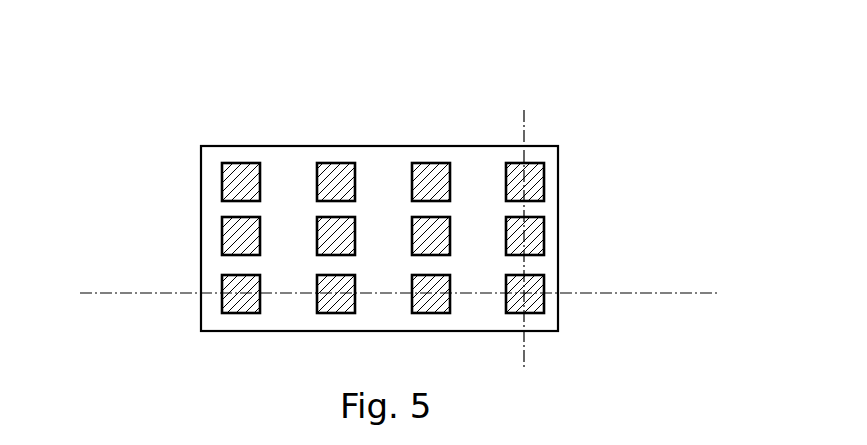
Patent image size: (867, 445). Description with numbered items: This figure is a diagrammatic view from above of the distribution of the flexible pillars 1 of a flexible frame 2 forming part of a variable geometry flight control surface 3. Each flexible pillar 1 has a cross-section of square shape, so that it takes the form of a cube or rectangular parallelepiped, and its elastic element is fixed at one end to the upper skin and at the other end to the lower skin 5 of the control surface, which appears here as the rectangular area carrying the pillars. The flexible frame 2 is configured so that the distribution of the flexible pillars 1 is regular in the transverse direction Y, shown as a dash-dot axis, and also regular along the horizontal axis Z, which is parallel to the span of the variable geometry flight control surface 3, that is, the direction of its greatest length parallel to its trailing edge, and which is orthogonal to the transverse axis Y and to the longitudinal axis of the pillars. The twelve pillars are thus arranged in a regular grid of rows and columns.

The flexible pillar 1 is at (544, 183).
The flexible frame 2 is at (632, 163).
The variable geometry flight control surface 3 is at (672, 94).
The lower skin 5 is at (285, 166).
The transverse axis Y is at (524, 123).
The horizontal axis Z is at (123, 293).